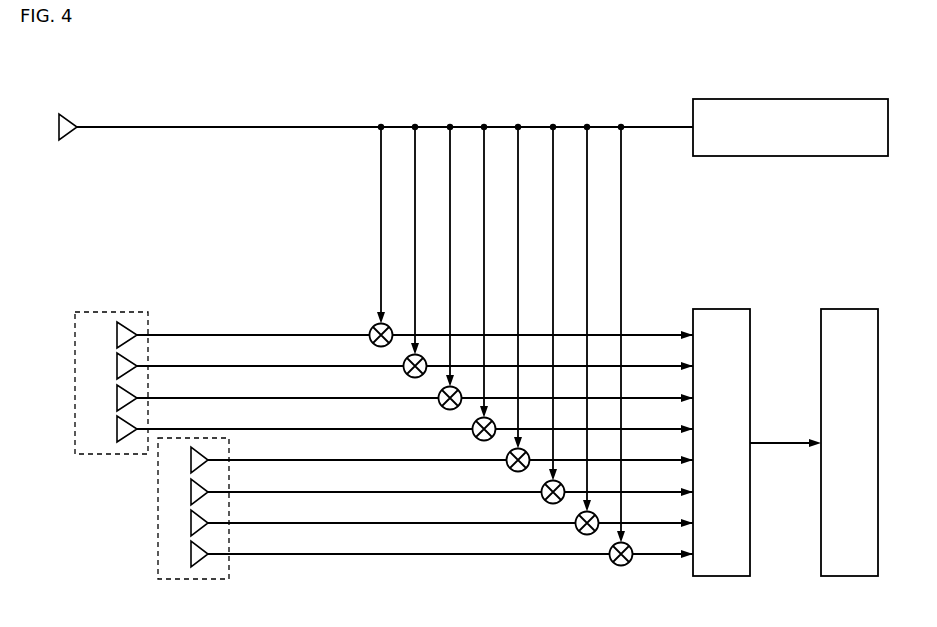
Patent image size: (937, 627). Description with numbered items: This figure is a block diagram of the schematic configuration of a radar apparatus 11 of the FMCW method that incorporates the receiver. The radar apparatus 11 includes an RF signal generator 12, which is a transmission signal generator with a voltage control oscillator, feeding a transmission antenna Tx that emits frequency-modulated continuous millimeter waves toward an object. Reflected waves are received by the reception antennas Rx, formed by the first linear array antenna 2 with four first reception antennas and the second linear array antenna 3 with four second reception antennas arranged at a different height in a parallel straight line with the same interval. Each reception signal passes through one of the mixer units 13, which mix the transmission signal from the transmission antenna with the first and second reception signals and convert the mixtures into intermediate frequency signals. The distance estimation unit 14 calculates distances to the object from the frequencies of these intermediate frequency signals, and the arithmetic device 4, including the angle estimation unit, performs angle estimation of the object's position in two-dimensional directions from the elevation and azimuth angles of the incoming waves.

The first linear array antenna 2 is at (158, 513).
The second linear array antenna 3 is at (75, 348).
The arithmetic device 4 is at (844, 309).
The radar apparatus 11 is at (483, 80).
The RF signal generator 12 is at (780, 99).
The mixer units 13 is at (372, 343).
The distance estimation unit 14 is at (716, 309).